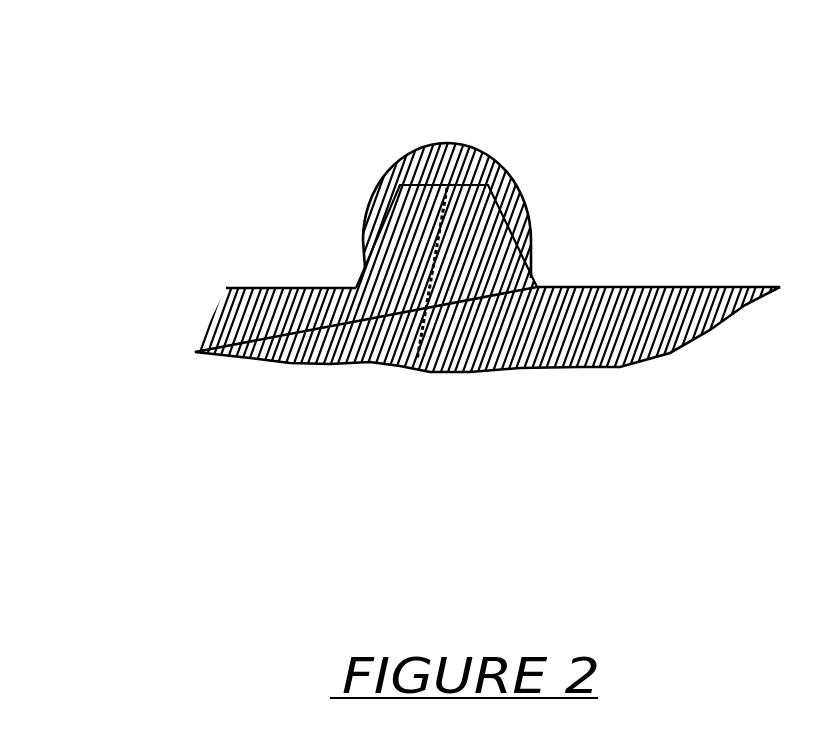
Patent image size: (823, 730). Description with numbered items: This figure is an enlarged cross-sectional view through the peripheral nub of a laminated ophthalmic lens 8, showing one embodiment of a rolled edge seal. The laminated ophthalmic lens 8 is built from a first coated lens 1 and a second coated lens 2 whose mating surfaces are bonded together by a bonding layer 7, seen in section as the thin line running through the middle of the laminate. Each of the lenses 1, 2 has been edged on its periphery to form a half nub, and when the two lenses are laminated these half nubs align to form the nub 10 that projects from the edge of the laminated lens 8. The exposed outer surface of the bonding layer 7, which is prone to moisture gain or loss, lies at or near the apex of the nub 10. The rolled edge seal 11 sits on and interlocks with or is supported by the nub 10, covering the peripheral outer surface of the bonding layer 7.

The first coated lens 1 is at (200, 340).
The second coated lens 2 is at (640, 327).
The bonding layer 7 is at (424, 360).
The laminated ophthalmic lens 8 is at (197, 415).
The nub 10 is at (507, 267).
The rolled edge seal 11 is at (475, 152).